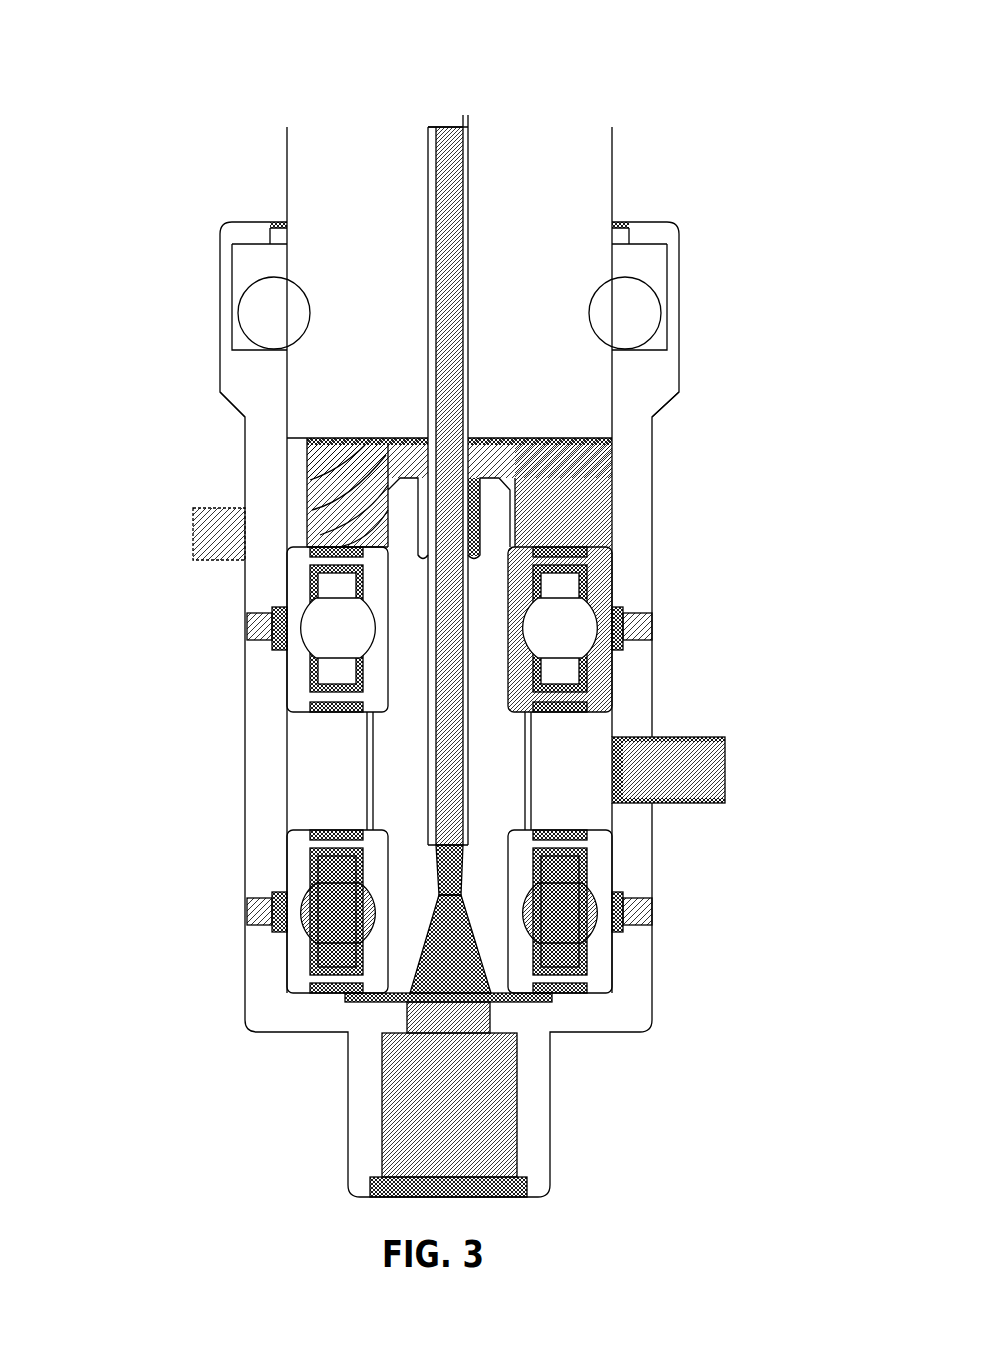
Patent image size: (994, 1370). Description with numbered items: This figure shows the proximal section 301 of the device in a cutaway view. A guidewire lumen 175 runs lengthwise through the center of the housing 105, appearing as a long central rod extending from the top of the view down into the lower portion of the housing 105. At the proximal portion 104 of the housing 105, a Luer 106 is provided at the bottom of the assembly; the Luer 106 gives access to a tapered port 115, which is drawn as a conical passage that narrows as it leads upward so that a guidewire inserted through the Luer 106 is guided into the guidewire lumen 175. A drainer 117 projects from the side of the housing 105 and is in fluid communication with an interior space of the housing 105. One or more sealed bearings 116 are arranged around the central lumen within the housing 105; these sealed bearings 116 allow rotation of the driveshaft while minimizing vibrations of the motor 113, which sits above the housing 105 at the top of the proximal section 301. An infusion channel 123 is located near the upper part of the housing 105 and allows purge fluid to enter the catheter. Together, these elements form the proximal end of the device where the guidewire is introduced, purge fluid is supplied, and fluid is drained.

The proximal section 301 is at (432, 90).
The motor 113 is at (302, 203).
The infusion channel 123 is at (405, 470).
The guidewire lumen 175 is at (450, 663).
The housing 105 is at (702, 527).
The drainer 117 is at (697, 797).
The proximal portion 104 is at (657, 982).
The sealed bearings 116 is at (296, 973).
The tapered port 115 is at (443, 977).
The Luer 106 is at (545, 1099).